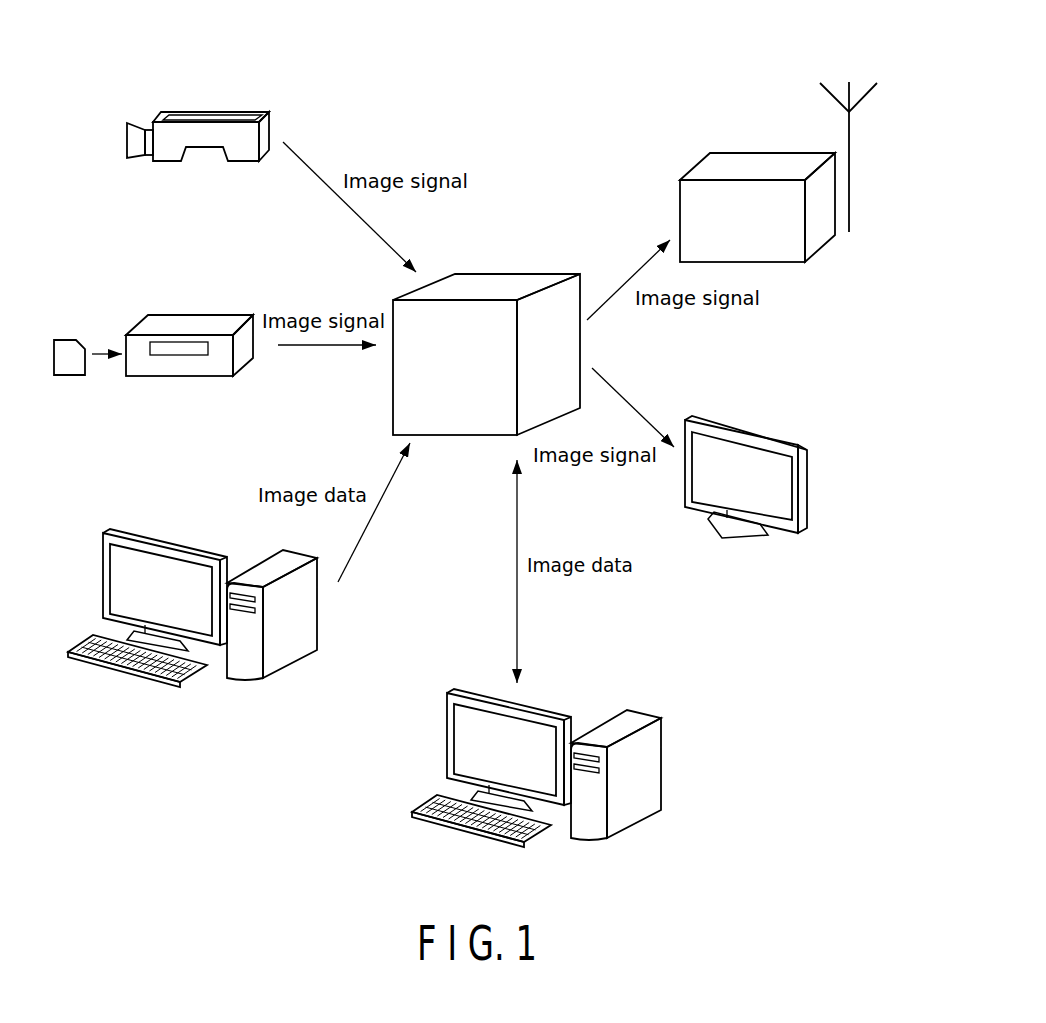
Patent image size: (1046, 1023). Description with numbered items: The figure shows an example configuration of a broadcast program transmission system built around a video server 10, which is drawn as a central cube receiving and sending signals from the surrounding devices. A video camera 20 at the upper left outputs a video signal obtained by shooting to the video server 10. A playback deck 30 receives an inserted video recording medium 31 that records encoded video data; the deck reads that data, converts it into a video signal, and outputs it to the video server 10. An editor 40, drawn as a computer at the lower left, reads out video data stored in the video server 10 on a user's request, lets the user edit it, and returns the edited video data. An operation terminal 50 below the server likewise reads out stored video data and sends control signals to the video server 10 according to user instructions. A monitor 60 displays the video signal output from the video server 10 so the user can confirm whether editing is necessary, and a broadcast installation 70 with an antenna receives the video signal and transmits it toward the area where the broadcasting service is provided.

The video server 10 is at (513, 274).
The video camera 20 is at (208, 112).
The playback deck 30 is at (198, 315).
The video recording medium 31 is at (73, 338).
The editor 40 is at (167, 532).
The operation terminal 50 is at (477, 690).
The monitor 60 is at (760, 430).
The broadcast installation 70 is at (760, 153).